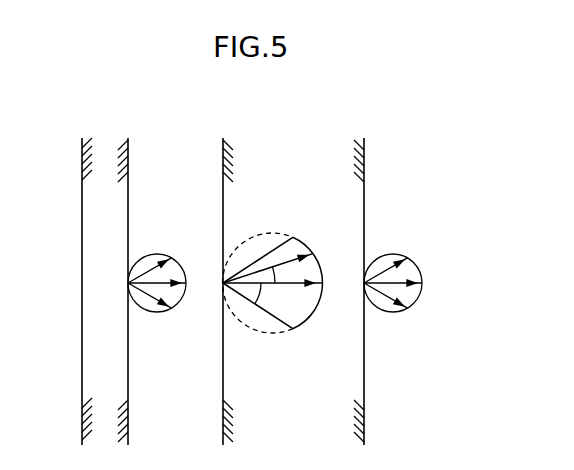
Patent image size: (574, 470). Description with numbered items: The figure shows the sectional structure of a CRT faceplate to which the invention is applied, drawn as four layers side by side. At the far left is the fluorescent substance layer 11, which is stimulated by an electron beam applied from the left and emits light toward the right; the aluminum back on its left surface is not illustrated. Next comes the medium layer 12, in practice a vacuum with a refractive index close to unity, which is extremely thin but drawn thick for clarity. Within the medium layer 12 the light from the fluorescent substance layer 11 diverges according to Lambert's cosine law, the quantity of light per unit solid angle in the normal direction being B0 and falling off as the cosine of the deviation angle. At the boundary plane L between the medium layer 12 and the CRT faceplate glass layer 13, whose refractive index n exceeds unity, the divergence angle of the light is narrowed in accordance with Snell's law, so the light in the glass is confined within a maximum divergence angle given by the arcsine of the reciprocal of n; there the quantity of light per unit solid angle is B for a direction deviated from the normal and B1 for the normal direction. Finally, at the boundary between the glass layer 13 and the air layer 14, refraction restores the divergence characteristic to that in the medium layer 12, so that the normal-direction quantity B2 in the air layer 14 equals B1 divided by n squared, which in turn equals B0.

The fluorescent substance layer 11 is at (127, 121).
The medium layer 12 is at (218, 121).
The CRT faceplate glass layer 13 is at (358, 121).
The air layer 14 is at (482, 121).
The boundary plane L is at (224, 202).
The quantity of light per unit solid angle in the θ direction B is at (293, 252).
The quantity of light per unit solid angle in the normal direction B0 is at (165, 288).
The quantity of light per unit solid angle in the normal direction at the boundary p B1 is at (312, 308).
The quantity of light per unit solid angle in the air layer B2 is at (402, 285).